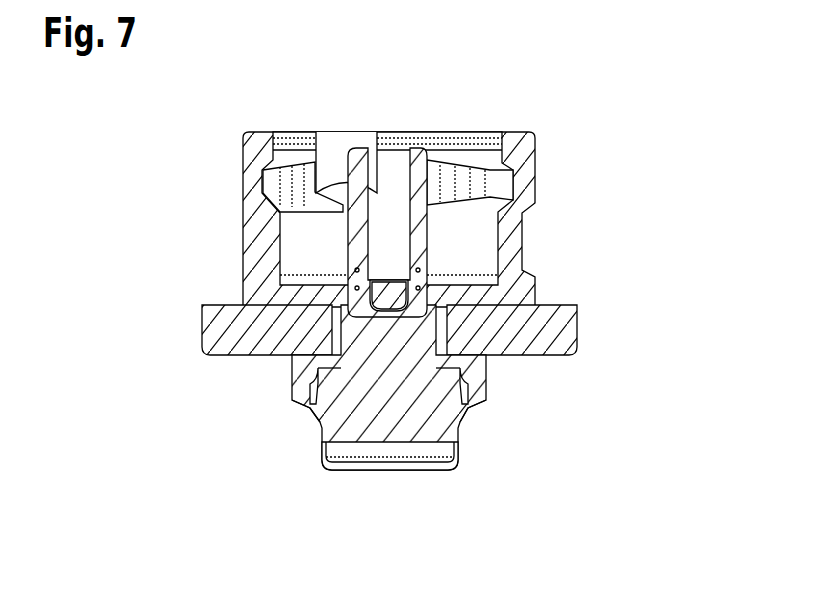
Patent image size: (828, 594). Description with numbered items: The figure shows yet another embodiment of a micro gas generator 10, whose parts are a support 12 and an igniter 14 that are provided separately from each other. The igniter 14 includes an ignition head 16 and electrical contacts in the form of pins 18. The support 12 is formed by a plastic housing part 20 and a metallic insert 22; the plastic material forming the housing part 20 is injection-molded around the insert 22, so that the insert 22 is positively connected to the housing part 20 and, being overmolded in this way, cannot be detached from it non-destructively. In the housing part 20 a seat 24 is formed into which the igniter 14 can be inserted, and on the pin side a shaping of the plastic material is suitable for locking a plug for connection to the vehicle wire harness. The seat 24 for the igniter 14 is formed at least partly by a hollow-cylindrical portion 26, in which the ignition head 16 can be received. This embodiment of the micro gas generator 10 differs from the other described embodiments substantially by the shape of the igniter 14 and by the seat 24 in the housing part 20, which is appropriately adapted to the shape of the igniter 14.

The micro gas generator 10 is at (623, 132).
The support 12 is at (567, 276).
The igniter 14 is at (389, 425).
The ignition head 16 is at (392, 418).
The pins 18 is at (425, 238).
The housing part 20 is at (255, 280).
The insert 22 is at (240, 329).
The seat 24 is at (293, 374).
The hollow-cylindrical portion 26 is at (293, 396).